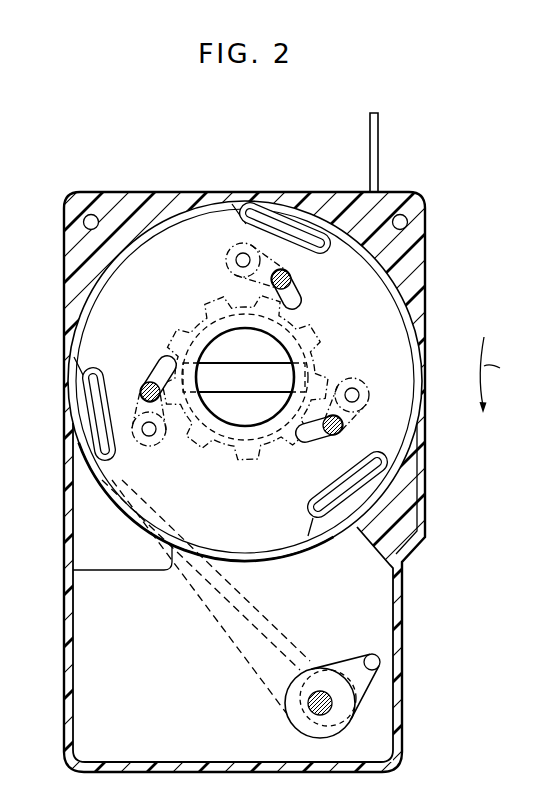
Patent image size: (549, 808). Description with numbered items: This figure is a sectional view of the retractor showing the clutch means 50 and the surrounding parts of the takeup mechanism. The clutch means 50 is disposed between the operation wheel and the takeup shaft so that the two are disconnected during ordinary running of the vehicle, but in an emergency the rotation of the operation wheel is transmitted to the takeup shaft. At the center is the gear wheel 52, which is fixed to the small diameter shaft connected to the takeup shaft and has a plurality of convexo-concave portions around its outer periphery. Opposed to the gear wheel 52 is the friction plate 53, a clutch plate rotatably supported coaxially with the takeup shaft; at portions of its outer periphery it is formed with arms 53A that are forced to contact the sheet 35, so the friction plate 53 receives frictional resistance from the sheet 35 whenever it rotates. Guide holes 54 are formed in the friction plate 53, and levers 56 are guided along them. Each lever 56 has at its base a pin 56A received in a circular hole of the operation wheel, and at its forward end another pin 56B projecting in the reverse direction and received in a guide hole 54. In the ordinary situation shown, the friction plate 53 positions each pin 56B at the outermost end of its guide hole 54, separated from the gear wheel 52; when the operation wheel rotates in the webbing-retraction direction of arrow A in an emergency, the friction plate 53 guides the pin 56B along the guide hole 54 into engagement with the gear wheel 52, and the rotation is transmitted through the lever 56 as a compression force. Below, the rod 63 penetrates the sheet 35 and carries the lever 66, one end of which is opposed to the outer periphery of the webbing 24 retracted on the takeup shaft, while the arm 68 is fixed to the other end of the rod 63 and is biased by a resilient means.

The webbing 24 is at (380, 133).
The sheet 35 is at (370, 583).
The clutch means 50 is at (205, 210).
The gear wheel 52 is at (172, 324).
The friction plate 53 is at (396, 320).
The arms 53A is at (278, 217).
The guide holes 54 is at (295, 297).
The levers 56 is at (236, 266).
The pin 56A is at (230, 258).
The pin 56B is at (291, 278).
The rod 63 is at (319, 692).
The lever 66 is at (200, 608).
The arm 68 is at (364, 659).
The arrow A is at (499, 375).